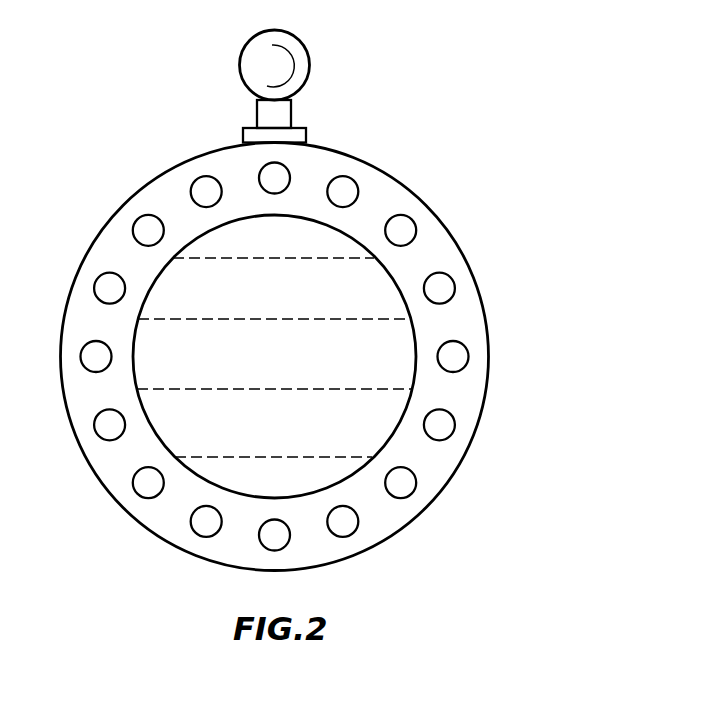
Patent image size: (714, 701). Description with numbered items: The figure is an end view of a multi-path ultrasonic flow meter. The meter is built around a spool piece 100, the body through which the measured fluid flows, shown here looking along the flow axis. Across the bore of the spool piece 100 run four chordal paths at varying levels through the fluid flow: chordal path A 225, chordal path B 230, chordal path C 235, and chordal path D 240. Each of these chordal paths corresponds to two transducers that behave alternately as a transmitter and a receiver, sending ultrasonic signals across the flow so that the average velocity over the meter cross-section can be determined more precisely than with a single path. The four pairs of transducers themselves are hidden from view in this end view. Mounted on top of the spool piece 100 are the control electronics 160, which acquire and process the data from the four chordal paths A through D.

The spool piece 100 is at (440, 217).
The control electronics 160 is at (310, 68).
The chordal path A 225 is at (232, 262).
The chordal path B 230 is at (232, 323).
The chordal path C 235 is at (237, 395).
The chordal path D 240 is at (317, 451).